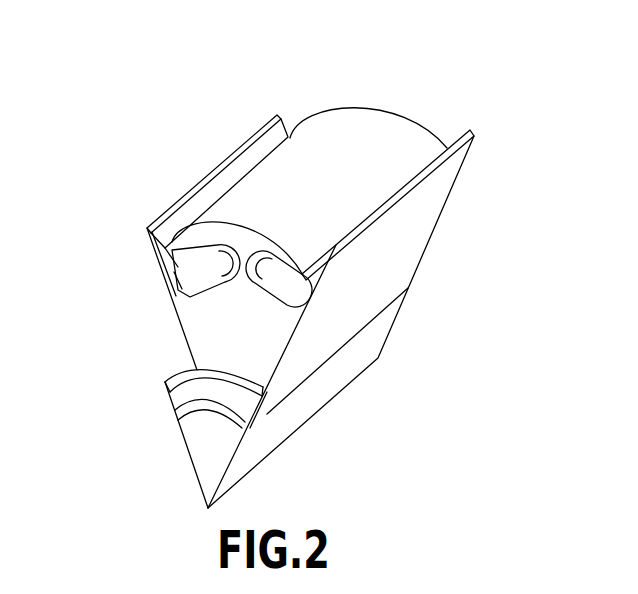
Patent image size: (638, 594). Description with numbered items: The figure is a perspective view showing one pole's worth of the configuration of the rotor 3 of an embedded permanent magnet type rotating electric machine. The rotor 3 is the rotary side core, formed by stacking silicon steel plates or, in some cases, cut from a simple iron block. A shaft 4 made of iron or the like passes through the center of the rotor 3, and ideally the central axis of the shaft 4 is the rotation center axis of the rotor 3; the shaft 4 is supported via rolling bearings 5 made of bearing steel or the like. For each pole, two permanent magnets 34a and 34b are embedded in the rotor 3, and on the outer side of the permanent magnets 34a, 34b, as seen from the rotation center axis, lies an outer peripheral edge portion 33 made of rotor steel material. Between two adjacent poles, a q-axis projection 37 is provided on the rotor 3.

The rotor 3 is at (428, 82).
The shaft 4 is at (305, 398).
The rolling bearing 5 is at (189, 393).
The outer peripheral edge portion 33 is at (330, 134).
The permanent magnet 34a is at (203, 267).
The permanent magnet 34b is at (298, 298).
The q-axis projection 37 is at (188, 192).